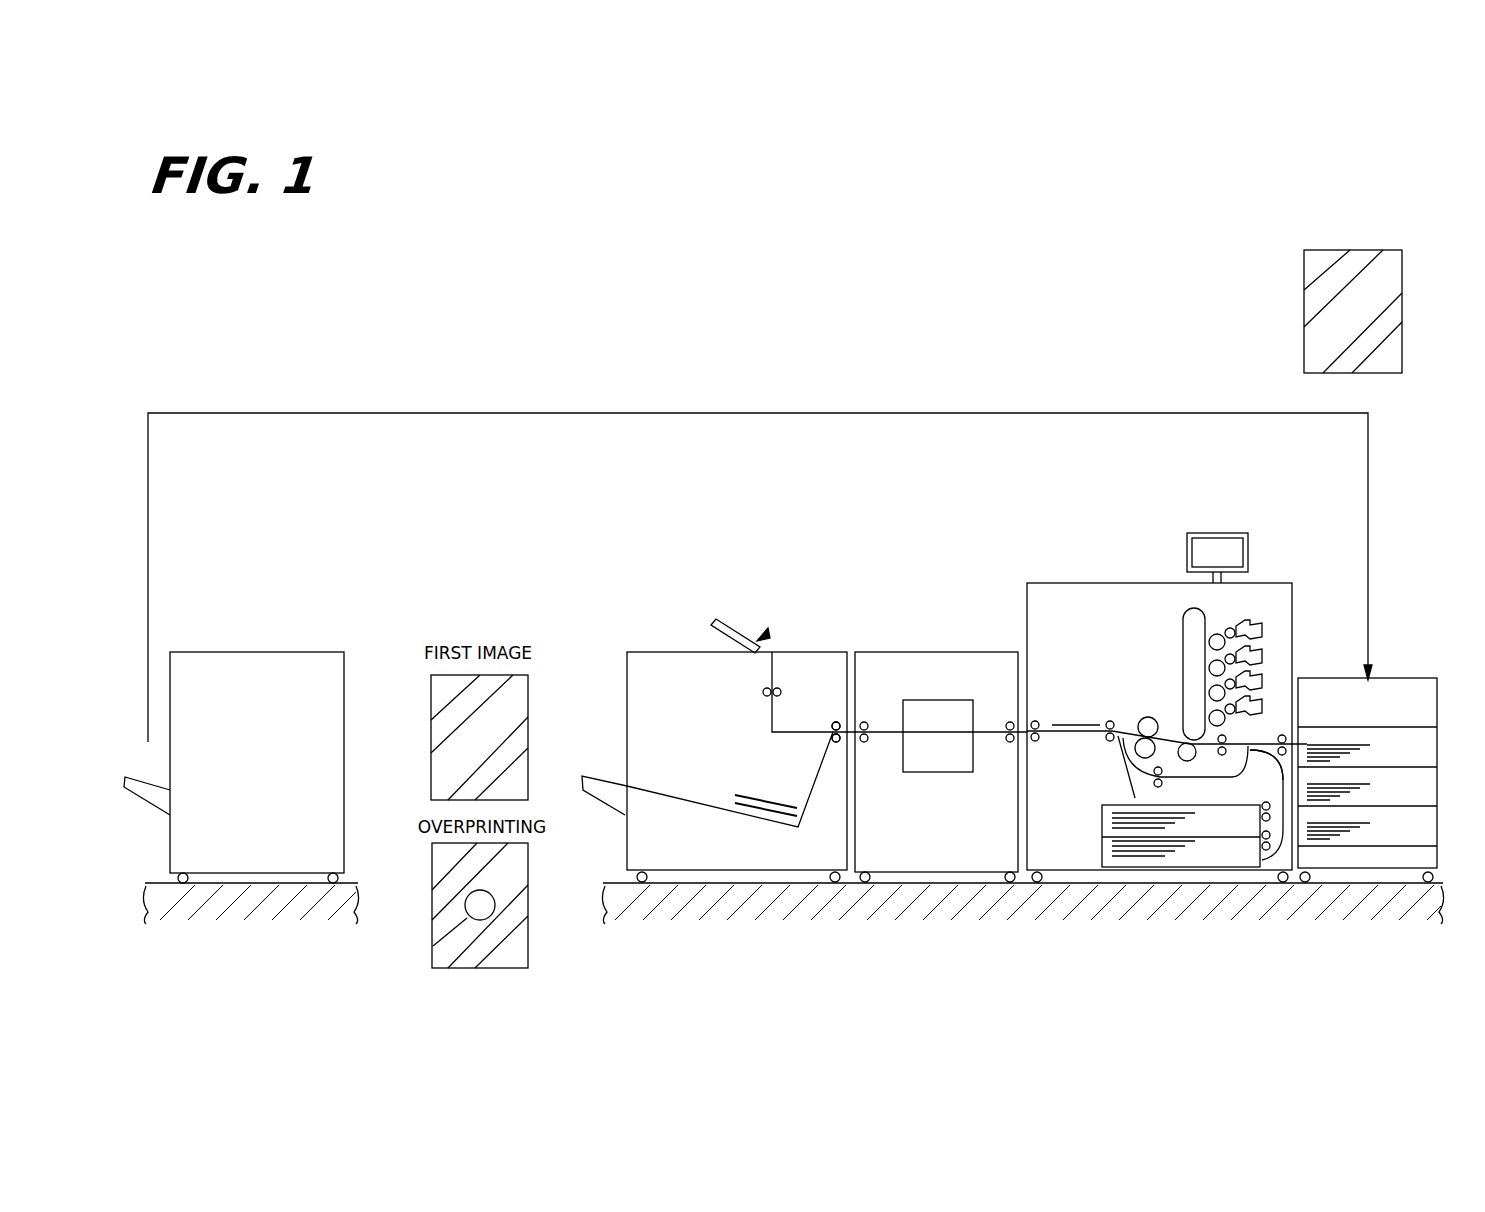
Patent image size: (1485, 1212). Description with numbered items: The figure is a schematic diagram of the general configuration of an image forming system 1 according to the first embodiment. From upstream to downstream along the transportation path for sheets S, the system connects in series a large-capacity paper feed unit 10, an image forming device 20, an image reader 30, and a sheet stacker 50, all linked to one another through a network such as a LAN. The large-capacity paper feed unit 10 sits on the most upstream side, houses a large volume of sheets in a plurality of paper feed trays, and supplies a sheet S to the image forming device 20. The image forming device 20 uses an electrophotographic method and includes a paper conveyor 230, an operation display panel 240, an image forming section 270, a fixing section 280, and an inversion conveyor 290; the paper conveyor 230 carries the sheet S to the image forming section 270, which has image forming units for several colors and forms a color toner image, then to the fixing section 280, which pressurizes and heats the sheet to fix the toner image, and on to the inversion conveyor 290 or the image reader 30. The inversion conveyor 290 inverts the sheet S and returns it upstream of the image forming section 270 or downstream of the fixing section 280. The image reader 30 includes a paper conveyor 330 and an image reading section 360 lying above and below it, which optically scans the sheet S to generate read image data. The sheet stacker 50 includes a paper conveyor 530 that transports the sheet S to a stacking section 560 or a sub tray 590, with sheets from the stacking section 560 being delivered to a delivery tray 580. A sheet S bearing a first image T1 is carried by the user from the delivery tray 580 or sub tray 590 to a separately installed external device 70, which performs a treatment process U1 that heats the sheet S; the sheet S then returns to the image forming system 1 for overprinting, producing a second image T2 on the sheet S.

The image forming system 1 is at (796, 360).
The large-capacity paper feed unit 10 is at (1405, 676).
The image forming device 20 is at (1285, 582).
The image reader 30 is at (920, 650).
The sheet stacker 50 is at (796, 650).
The external device 70 is at (262, 652).
The paper conveyor 230 is at (1250, 756).
The operation display panel 240 is at (1238, 532).
The image forming section 270 is at (1262, 622).
The fixing section 280 is at (1148, 716).
The inversion conveyor 290 is at (1187, 780).
The paper conveyor 330 is at (990, 740).
The image reading section 360 is at (924, 775).
The paper conveyor 530 is at (828, 736).
The stacking section 560 is at (762, 822).
The delivery tray 580 is at (603, 775).
The sub tray 590 is at (735, 618).
The sheet S is at (1405, 277).
The first image T1 is at (1333, 258).
The second image T2 is at (433, 946).
The treatment process U1 is at (1308, 311).